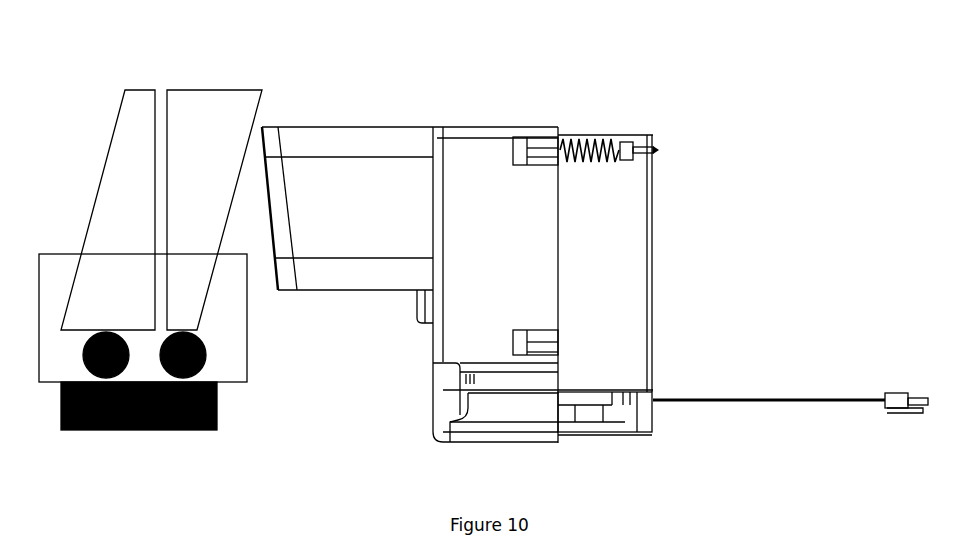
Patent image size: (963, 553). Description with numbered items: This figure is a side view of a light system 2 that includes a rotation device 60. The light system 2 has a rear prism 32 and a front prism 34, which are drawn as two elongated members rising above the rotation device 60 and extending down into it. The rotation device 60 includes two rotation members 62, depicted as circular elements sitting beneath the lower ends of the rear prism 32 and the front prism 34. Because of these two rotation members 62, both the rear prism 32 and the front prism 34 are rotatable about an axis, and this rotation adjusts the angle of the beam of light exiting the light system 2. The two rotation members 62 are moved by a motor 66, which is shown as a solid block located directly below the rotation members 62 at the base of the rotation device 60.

The light system 2 is at (736, 95).
The rear prism 32 is at (207, 105).
The front prism 34 is at (131, 103).
The rotation device 60 is at (274, 401).
The rotation members 62 is at (92, 332).
The motor 66 is at (107, 430).